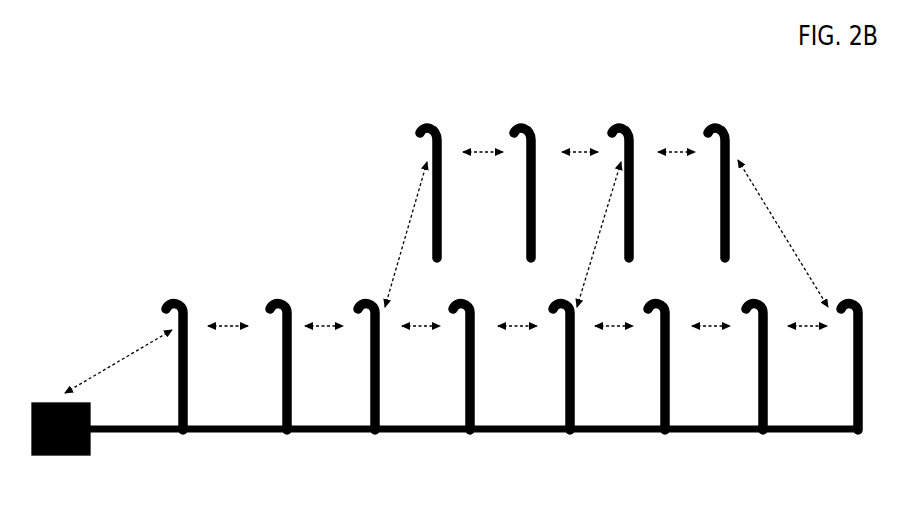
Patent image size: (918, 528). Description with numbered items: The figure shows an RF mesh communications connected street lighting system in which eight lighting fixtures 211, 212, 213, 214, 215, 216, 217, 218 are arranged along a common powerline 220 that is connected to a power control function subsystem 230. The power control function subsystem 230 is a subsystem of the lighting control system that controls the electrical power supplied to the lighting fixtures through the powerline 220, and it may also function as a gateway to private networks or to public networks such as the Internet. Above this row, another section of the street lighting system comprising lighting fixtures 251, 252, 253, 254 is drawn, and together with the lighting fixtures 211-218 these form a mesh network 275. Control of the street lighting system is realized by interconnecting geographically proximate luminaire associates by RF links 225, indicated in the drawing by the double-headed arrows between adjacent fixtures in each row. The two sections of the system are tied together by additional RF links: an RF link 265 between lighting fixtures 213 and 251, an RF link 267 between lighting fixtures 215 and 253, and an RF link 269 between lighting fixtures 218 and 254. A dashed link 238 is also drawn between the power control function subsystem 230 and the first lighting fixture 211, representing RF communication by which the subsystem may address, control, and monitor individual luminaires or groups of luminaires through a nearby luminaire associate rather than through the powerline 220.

The mesh network 275 is at (262, 122).
The powerline 220 is at (280, 436).
The power control function subsystem 230 is at (58, 457).
The lighting fixture 211 is at (185, 300).
The lighting fixture 212 is at (289, 300).
The lighting fixture 213 is at (377, 300).
The lighting fixture 214 is at (472, 300).
The lighting fixture 215 is at (572, 300).
The lighting fixture 216 is at (667, 300).
The lighting fixture 217 is at (765, 300).
The lighting fixture 218 is at (860, 300).
The lighting fixture 251 is at (441, 125).
The lighting fixture 252 is at (535, 125).
The lighting fixture 253 is at (633, 125).
The lighting fixture 254 is at (729, 125).
The RF link 225 is at (230, 330).
The pad-to-pillar distance 238 is at (110, 368).
The RF link 265 is at (407, 222).
The RF link 267 is at (604, 206).
The RF link 269 is at (757, 183).